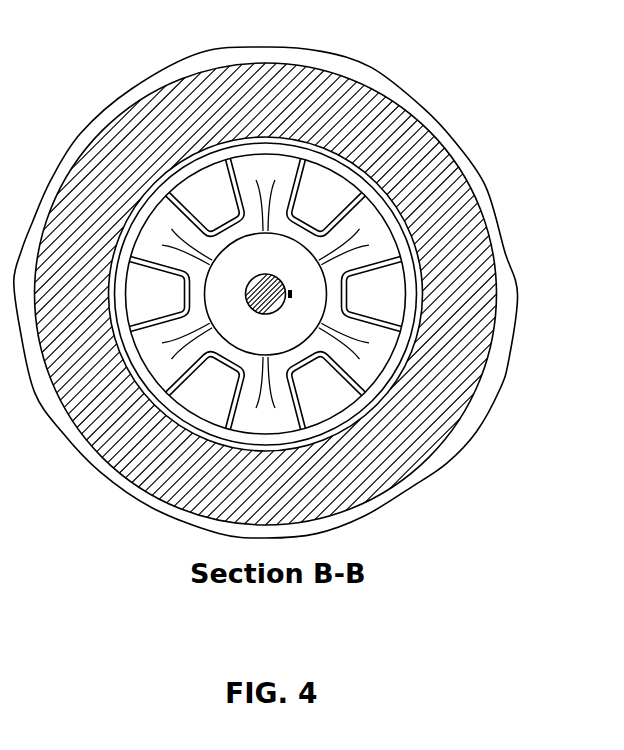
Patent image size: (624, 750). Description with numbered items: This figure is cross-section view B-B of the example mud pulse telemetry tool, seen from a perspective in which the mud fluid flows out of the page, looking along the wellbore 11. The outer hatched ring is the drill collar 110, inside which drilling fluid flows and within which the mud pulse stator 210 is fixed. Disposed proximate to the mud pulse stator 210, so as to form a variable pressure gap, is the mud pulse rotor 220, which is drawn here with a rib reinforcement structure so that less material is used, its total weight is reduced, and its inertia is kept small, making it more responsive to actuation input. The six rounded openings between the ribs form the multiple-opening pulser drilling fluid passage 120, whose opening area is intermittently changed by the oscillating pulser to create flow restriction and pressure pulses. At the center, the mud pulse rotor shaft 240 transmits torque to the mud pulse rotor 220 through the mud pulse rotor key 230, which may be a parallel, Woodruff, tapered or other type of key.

The wellbore 11 is at (367, 66).
The drill collar 110 is at (427, 115).
The mud pulse stator 210 is at (370, 190).
The mud pulse rotor 220 is at (367, 237).
The pulser drilling fluid passage 120 is at (390, 288).
The mud pulse rotor key 230 is at (292, 293).
The mud pulse rotor shaft 240 is at (279, 309).